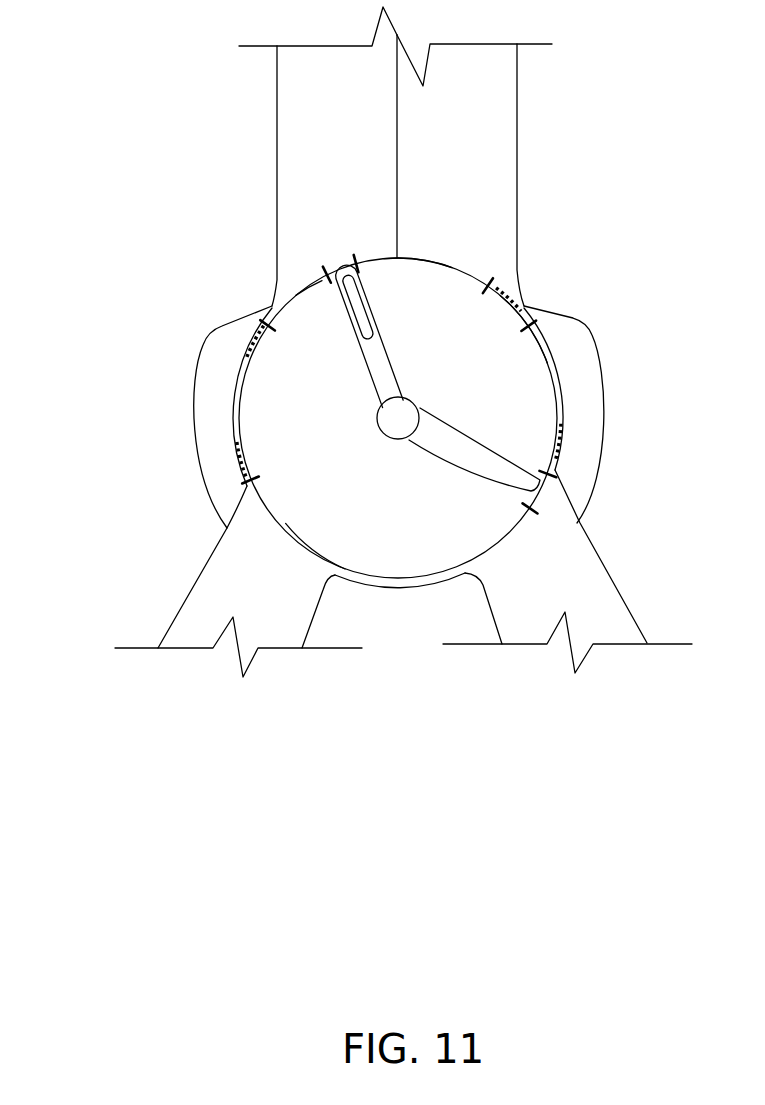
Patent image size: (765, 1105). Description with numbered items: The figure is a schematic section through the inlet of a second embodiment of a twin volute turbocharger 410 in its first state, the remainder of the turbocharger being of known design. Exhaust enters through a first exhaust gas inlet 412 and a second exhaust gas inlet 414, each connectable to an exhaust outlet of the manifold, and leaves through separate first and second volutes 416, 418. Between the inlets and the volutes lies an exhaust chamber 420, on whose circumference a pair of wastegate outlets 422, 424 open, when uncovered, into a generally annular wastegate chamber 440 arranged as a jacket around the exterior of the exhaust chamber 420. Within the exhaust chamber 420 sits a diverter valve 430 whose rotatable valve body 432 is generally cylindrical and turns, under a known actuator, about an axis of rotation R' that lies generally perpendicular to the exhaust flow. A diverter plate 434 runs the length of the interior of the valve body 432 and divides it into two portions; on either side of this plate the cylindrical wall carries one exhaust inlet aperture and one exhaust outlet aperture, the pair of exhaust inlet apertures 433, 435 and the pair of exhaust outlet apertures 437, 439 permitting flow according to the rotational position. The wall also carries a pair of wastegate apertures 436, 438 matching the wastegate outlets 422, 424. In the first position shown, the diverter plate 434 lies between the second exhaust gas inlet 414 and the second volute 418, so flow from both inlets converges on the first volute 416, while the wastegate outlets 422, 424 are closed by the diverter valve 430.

The twin volute turbocharger 410 is at (92, 122).
The first exhaust gas inlet 412 is at (217, 600).
The second exhaust gas inlet 414 is at (592, 602).
The first volute 416 is at (297, 115).
The second volute 418 is at (495, 120).
The exhaust chamber 420 is at (541, 526).
The wastegate outlet 422 is at (242, 457).
The wastegate outlet 424 is at (566, 443).
The diverter valve 430 is at (462, 292).
The rotatable valve body 432 is at (484, 557).
The exhaust inlet aperture 433 is at (307, 546).
The diverter plate 434 is at (384, 374).
The exhaust inlet aperture 435 is at (542, 350).
The wastegate aperture 436 is at (248, 343).
The exhaust outlet aperture 437 is at (305, 294).
The wastegate aperture 438 is at (523, 299).
The exhaust outlet aperture 439 is at (428, 262).
The wastegate chamber 440 is at (585, 423).
The axis of rotation R' is at (393, 448).